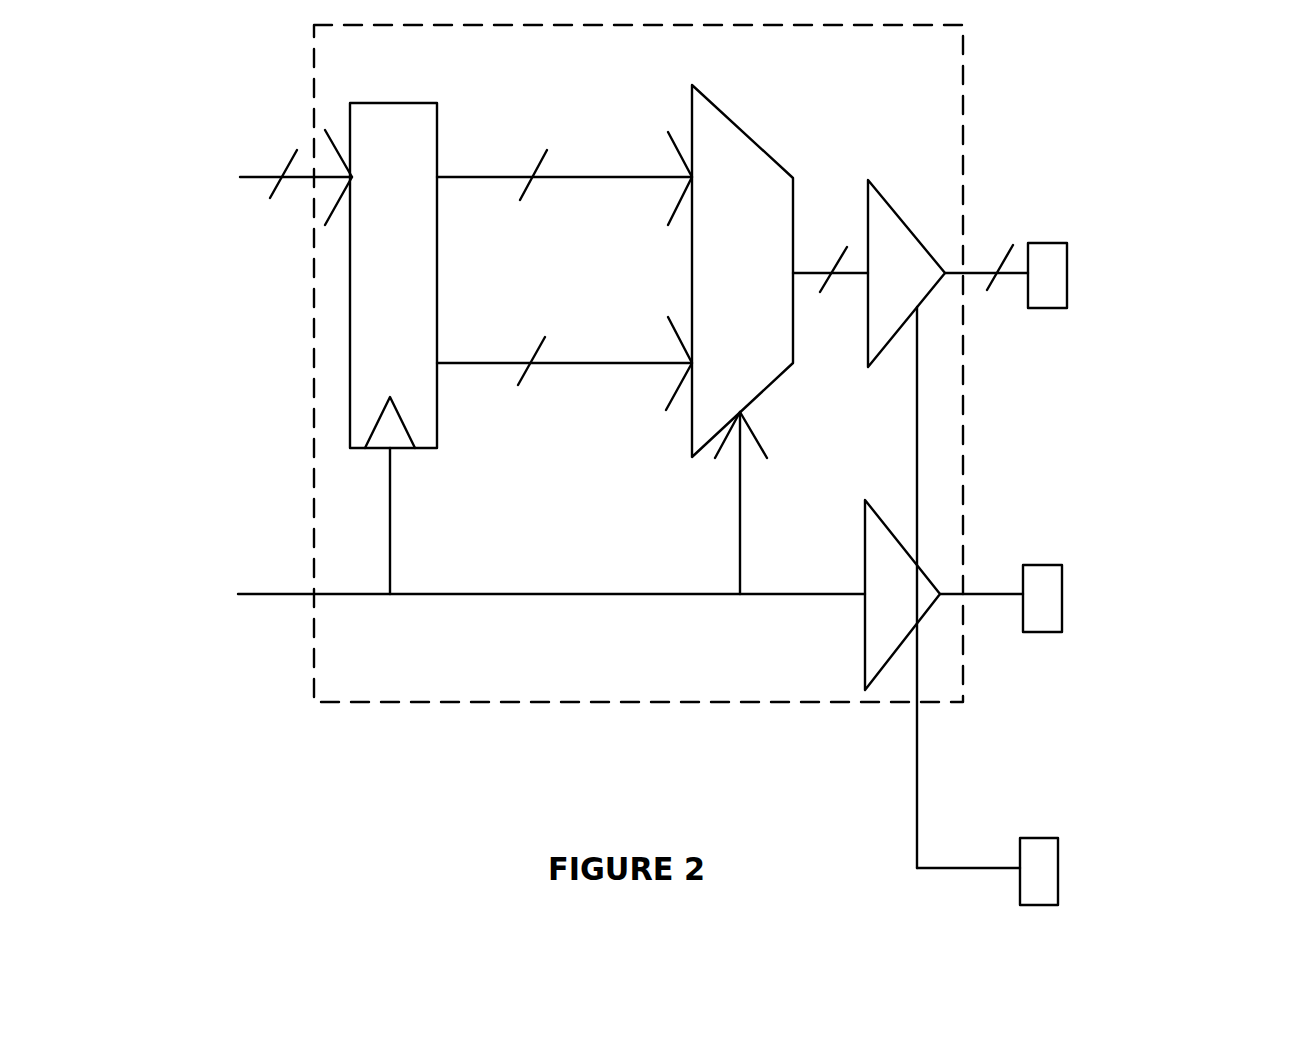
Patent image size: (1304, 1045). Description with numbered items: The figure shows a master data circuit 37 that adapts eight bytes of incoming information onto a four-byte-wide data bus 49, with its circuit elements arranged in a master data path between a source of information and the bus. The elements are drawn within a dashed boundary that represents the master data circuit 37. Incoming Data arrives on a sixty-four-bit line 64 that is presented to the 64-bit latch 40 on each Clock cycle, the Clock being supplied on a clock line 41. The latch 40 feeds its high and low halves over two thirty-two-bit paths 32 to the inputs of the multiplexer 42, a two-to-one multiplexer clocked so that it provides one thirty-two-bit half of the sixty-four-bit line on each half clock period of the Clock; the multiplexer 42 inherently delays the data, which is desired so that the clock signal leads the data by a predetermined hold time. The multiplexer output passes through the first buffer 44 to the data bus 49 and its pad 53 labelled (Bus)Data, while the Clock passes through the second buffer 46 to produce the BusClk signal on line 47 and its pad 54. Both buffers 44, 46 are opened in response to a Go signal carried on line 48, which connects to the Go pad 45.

The master data circuit 37 is at (465, 702).
The 64-bit data input bus 64 is at (251, 190).
The 64-bit latch 40 is at (437, 413).
The 32-bit bus 32 is at (731, 259).
The multiplexer 42 is at (692, 435).
The first buffer 44 is at (903, 213).
The data bus 49 is at (977, 275).
The bus data pad 53 is at (1048, 243).
The clock line 41 is at (517, 594).
The second buffer 46 is at (888, 528).
The BusClk line 47 is at (995, 597).
The bus clock pad 54 is at (1040, 565).
The Go signal line 48 is at (968, 868).
The go pad 45 is at (1043, 838).